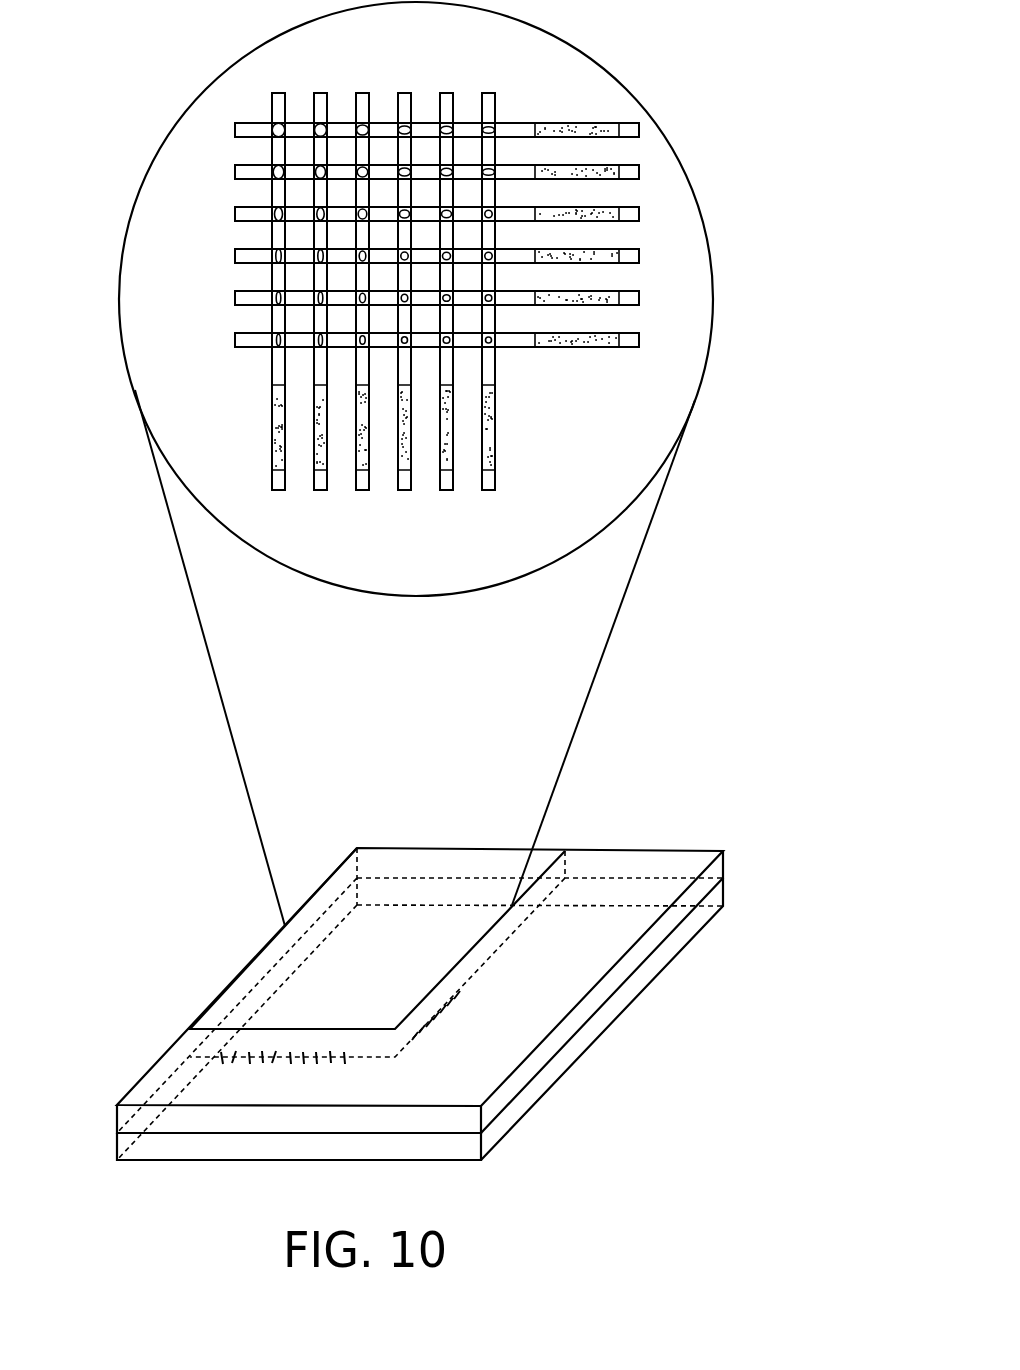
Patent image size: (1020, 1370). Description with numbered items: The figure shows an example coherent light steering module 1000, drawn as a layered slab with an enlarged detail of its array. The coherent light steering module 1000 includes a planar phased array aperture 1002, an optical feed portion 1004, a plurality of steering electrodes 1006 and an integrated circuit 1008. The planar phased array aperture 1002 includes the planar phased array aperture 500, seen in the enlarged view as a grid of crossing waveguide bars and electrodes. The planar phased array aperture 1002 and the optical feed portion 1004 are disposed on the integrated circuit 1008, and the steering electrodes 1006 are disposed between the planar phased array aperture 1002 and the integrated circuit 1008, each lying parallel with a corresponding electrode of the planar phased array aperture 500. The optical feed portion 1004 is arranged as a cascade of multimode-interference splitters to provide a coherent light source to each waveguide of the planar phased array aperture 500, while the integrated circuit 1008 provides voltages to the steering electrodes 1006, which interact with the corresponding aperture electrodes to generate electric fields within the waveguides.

The planar phased array aperture 500 is at (247, 360).
The coherent light steering module 1000 is at (461, 961).
The planar phased array aperture 1002 is at (267, 947).
The optical feed portion 1004 is at (723, 863).
The plurality of steering electrodes 1006 is at (221, 1054).
The integrated circuit 1008 is at (522, 1117).